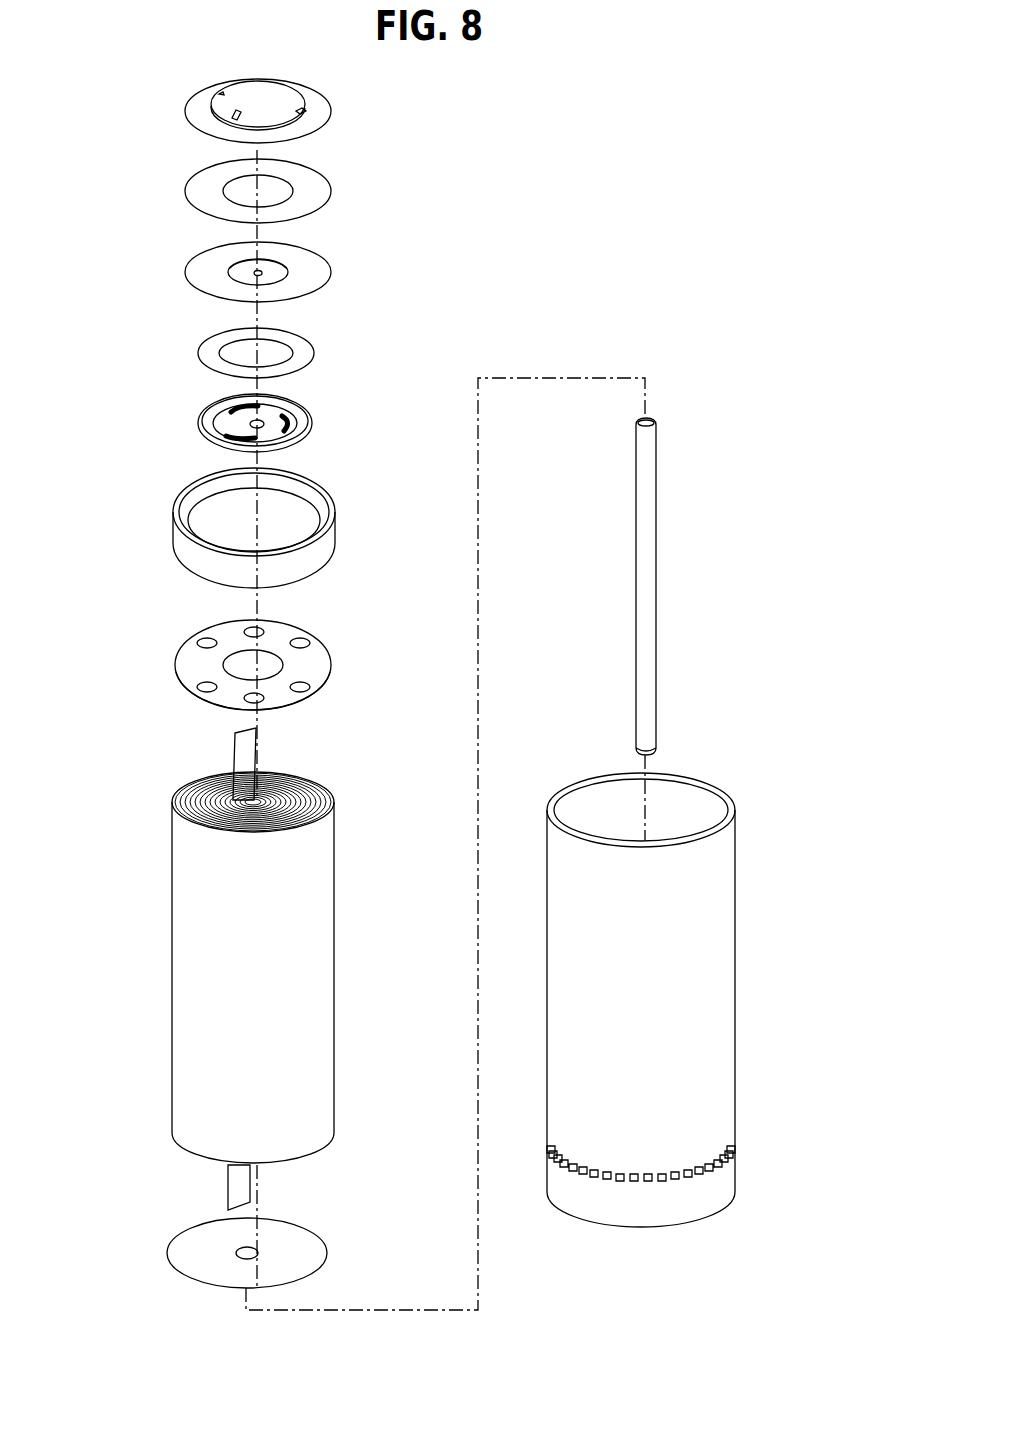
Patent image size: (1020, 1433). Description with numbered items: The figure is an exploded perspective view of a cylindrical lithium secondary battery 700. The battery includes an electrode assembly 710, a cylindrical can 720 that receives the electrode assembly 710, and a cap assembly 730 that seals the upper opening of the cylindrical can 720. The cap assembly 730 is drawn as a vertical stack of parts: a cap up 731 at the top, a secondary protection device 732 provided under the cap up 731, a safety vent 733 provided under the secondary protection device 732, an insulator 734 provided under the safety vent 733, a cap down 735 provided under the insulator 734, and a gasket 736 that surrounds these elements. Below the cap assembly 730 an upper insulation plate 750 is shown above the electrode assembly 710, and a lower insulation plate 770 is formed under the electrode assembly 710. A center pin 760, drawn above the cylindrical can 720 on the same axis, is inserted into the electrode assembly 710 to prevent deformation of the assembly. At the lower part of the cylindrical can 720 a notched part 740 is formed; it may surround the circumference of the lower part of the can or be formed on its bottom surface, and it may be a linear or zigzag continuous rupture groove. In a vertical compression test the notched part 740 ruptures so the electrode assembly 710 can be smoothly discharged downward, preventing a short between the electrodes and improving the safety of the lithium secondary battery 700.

The lithium secondary battery 700 is at (745, 105).
The electrode assembly 710 is at (156, 920).
The cylindrical can 720 is at (722, 978).
The cap assembly 730 is at (97, 100).
The cap up 731 is at (187, 113).
The secondary protection device 732 is at (187, 190).
The safety vent 733 is at (187, 272).
The insulator 734 is at (197, 355).
The cap down 735 is at (197, 422).
The gasket 736 is at (178, 513).
The notched part 740 is at (740, 1152).
The upper insulation plate 750 is at (175, 665).
The center pin 760 is at (657, 585).
The lower insulation plate 770 is at (190, 1242).